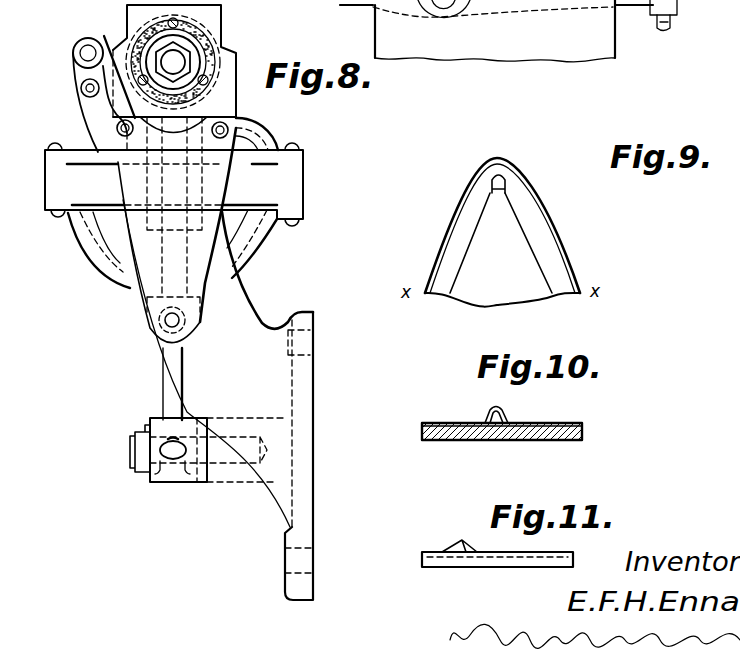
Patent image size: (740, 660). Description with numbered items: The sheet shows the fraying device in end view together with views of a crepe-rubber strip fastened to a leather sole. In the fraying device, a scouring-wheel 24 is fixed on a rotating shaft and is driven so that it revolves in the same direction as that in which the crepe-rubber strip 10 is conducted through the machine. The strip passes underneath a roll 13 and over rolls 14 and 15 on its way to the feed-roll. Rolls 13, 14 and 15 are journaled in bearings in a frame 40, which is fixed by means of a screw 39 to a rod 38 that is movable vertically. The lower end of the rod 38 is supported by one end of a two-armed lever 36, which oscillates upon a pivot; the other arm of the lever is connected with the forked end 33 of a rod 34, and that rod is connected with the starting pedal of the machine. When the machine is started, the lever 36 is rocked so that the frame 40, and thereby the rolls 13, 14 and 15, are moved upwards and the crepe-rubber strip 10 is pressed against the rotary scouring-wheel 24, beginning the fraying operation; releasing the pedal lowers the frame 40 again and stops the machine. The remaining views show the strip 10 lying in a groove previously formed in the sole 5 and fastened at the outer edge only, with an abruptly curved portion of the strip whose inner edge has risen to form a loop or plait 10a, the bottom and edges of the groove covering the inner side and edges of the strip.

In FIG. 9, the sole 5 is at (522, 253).
In FIG. 10, the sole 5 is at (543, 442).
In FIG. 11, the sole 5 is at (488, 565).
In FIG. 9, the crepe-rubber strip 10 is at (457, 262).
In FIG. 10, the crepe-rubber strip 10 is at (440, 423).
In FIG. 11, the crepe-rubber strip 10 is at (537, 555).
In FIG. 9, the loop or plait 10a is at (503, 175).
In FIG. 10, the loop or plait 10a is at (503, 408).
In FIG. 11, the loop or plait 10a is at (457, 545).
In FIG. 8, the roll 13 is at (104, 85).
In FIG. 8, the roll 14 is at (118, 127).
In FIG. 8, the roll 15 is at (229, 132).
In FIG. 8, the scouring-wheel 24 is at (203, 42).
In FIG. 8, the forked end 33 is at (650, 7).
In FIG. 8, the rod 34 is at (670, 22).
In FIG. 8, the two-armed lever 36 is at (183, 443).
In FIG. 8, the rod 38 is at (163, 381).
In FIG. 8, the screw 39 is at (201, 324).
In FIG. 8, the frame 40 is at (215, 235).